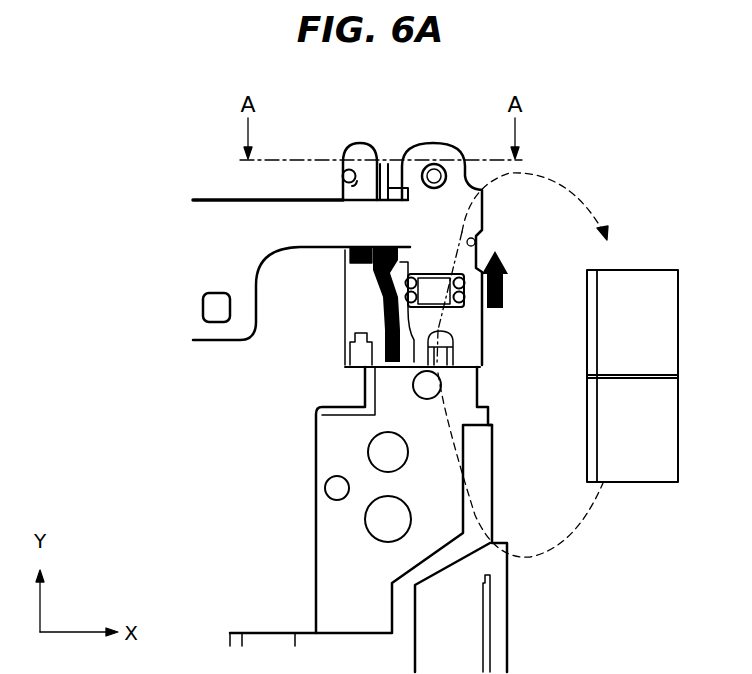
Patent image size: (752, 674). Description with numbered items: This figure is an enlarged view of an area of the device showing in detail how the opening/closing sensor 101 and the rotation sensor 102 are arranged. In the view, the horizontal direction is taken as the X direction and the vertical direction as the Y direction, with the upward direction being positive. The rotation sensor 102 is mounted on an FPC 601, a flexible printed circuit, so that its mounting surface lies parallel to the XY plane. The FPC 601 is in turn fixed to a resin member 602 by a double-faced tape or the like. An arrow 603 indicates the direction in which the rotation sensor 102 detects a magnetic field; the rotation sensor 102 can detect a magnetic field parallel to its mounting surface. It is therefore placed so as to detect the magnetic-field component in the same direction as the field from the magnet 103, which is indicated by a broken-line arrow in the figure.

The opening/closing sensor 101 is at (338, 262).
The rotation sensor 102 is at (452, 302).
The magnet 103 is at (640, 478).
The FPC 601 is at (433, 143).
The resin member 602 is at (500, 560).
The arrow 603 is at (500, 262).